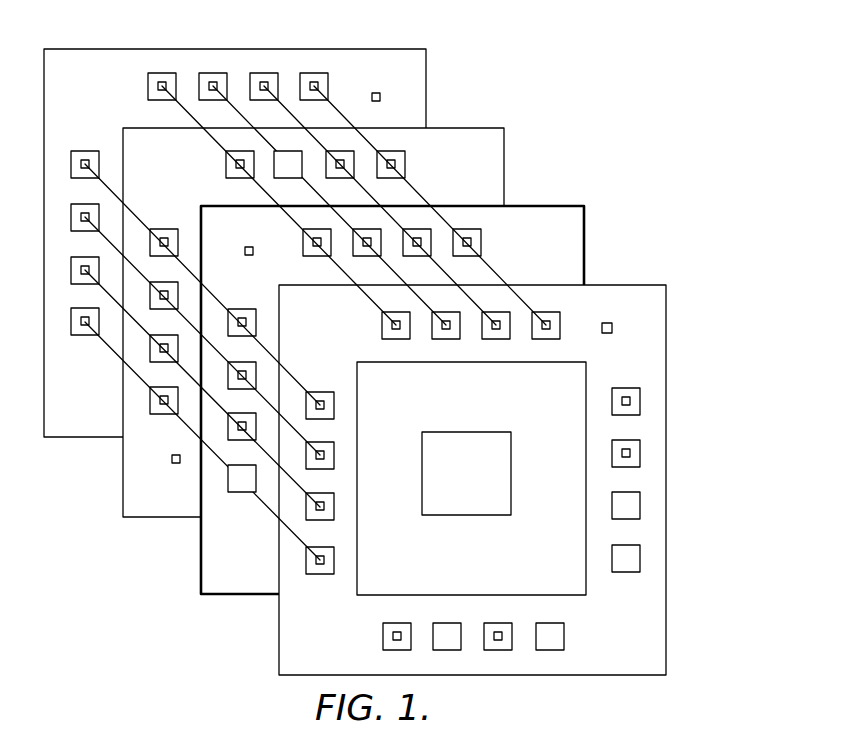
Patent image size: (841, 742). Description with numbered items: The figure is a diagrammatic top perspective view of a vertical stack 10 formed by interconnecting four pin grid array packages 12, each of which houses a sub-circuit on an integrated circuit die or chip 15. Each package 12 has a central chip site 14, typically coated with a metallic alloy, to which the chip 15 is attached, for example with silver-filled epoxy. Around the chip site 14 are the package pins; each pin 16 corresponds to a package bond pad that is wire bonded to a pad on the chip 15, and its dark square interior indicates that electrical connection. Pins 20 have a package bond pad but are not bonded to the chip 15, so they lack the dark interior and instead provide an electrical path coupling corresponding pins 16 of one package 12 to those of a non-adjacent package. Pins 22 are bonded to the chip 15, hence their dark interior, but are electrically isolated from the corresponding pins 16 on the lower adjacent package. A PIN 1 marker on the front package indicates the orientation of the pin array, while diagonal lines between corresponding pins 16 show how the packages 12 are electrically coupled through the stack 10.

The vertical stack 10 is at (522, 46).
The electronic package 12 is at (426, 99).
The central chip site 14 is at (562, 406).
The integrated circuit die or chip 15 is at (472, 487).
The pin 16 is at (328, 78).
The pin 20 is at (295, 146).
The pin 22 is at (405, 158).
The pin 1 indicator PIN 1 is at (612, 329).